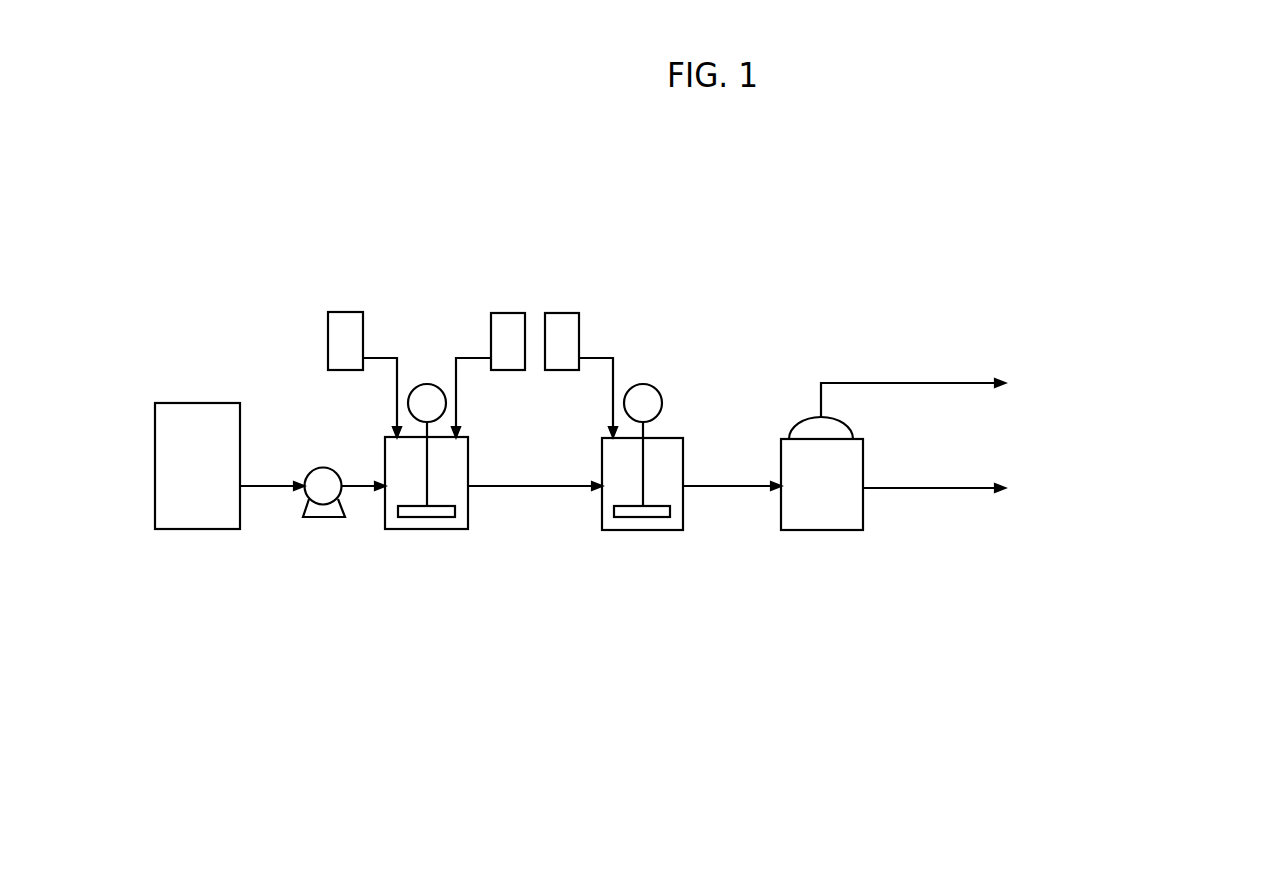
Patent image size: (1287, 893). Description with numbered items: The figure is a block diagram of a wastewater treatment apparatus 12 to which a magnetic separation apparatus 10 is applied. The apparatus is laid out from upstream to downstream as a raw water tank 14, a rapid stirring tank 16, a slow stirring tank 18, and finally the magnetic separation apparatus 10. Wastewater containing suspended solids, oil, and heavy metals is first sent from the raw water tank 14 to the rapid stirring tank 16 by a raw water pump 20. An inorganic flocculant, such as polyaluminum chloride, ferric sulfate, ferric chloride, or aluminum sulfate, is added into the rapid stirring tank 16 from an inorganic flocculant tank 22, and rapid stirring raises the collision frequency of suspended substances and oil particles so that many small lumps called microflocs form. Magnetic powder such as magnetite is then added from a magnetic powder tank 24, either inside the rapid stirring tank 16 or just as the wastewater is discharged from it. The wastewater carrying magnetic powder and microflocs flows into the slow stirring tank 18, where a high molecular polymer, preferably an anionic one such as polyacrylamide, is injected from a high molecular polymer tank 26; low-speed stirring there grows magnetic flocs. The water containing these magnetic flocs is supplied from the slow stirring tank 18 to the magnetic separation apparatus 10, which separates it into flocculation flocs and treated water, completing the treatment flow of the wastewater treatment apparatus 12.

The magnetic separation apparatus 10 is at (870, 455).
The wastewater treatment apparatus 12 is at (818, 343).
The raw water tank 14 is at (197, 403).
The rapid stirring tank 16 is at (427, 531).
The slow stirring tank 18 is at (645, 531).
The raw water pump 20 is at (321, 467).
The inorganic flocculant tank 22 is at (343, 312).
The magnetic powder tank 24 is at (501, 312).
The high molecular polymer tank 26 is at (566, 312).